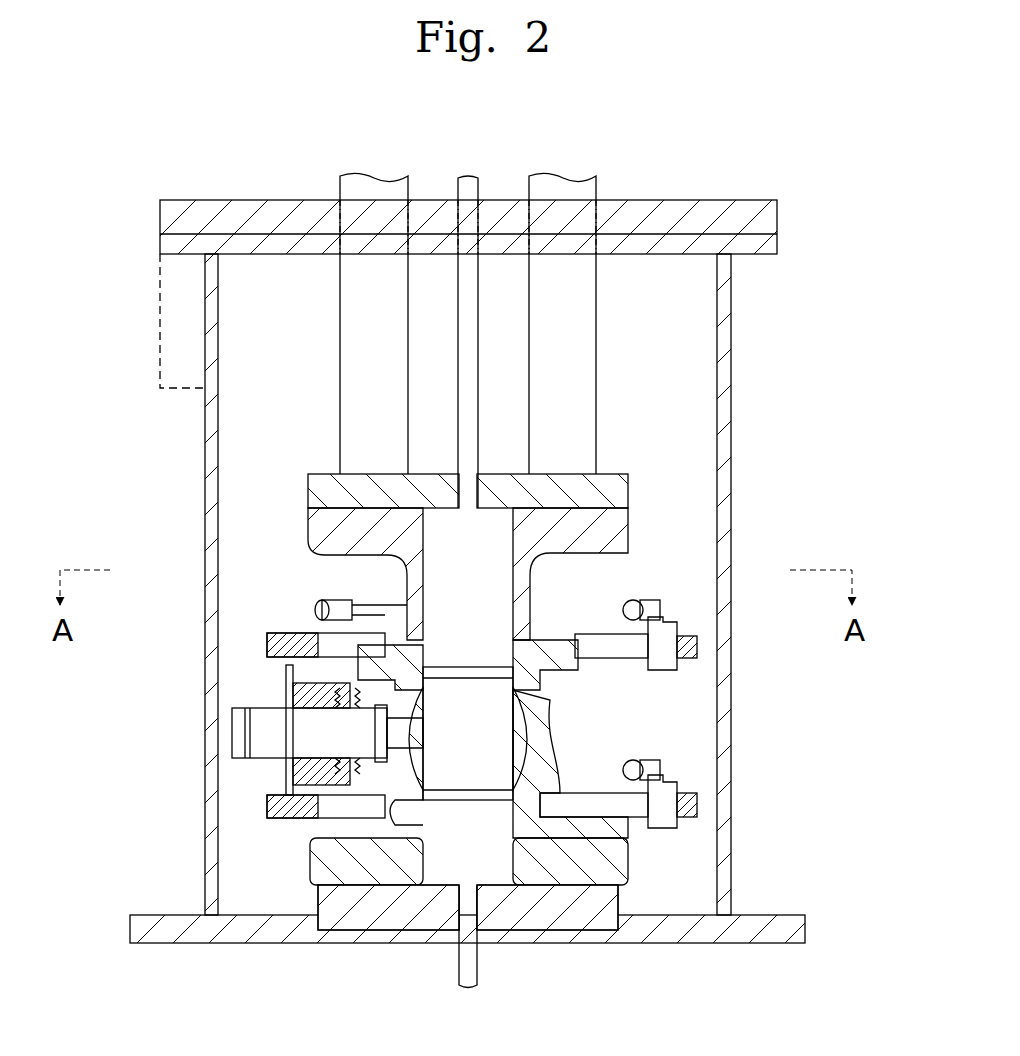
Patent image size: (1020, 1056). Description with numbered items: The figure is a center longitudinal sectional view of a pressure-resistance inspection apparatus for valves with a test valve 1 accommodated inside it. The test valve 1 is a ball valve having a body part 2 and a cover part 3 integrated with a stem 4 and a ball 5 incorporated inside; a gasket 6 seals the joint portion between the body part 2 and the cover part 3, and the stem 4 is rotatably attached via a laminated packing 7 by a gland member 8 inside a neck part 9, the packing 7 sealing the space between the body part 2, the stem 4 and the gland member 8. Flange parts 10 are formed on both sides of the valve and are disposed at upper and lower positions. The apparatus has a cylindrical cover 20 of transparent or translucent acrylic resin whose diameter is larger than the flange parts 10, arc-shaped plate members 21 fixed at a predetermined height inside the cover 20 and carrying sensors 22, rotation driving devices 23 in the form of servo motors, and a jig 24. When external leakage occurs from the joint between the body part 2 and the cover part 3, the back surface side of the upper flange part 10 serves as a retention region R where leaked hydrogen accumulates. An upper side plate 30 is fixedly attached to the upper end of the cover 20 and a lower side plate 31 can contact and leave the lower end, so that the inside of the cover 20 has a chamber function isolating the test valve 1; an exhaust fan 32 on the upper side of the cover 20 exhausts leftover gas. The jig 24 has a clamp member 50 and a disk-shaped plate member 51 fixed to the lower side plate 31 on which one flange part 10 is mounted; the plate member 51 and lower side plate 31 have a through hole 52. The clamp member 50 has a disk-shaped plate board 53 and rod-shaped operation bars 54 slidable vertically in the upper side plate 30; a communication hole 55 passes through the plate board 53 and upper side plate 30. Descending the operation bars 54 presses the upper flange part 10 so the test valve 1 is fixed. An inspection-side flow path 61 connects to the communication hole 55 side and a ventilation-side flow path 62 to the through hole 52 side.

The test valve 1 is at (548, 728).
The body part 2 is at (395, 830).
The cover part 3 is at (525, 600).
The stem 4 is at (310, 735).
The ball 5 is at (600, 835).
The gasket 6 is at (567, 698).
The laminated packing 7 is at (320, 690).
The gland member 8 is at (320, 770).
The neck part 9 is at (288, 668).
The flange part 10 is at (610, 520).
The cover 20 is at (725, 388).
The arc-shaped plate member 21 is at (300, 805).
The sensor 22 is at (325, 603).
The rotation driving device 23 is at (697, 648).
The jig 24 is at (630, 490).
The upper side plate 30 is at (178, 218).
The lower side plate 31 is at (805, 925).
The exhaust fan 32 is at (160, 300).
The clamp member 50 is at (440, 468).
The plate member 51 is at (432, 905).
The through hole 52 is at (468, 907).
The plate board 53 is at (330, 490).
The operation bar 54 is at (355, 335).
The communication hole 55 is at (478, 470).
The inspection-side flow path 61 is at (470, 180).
The ventilation-side flow path 62 is at (465, 960).
The retention region R is at (375, 580).